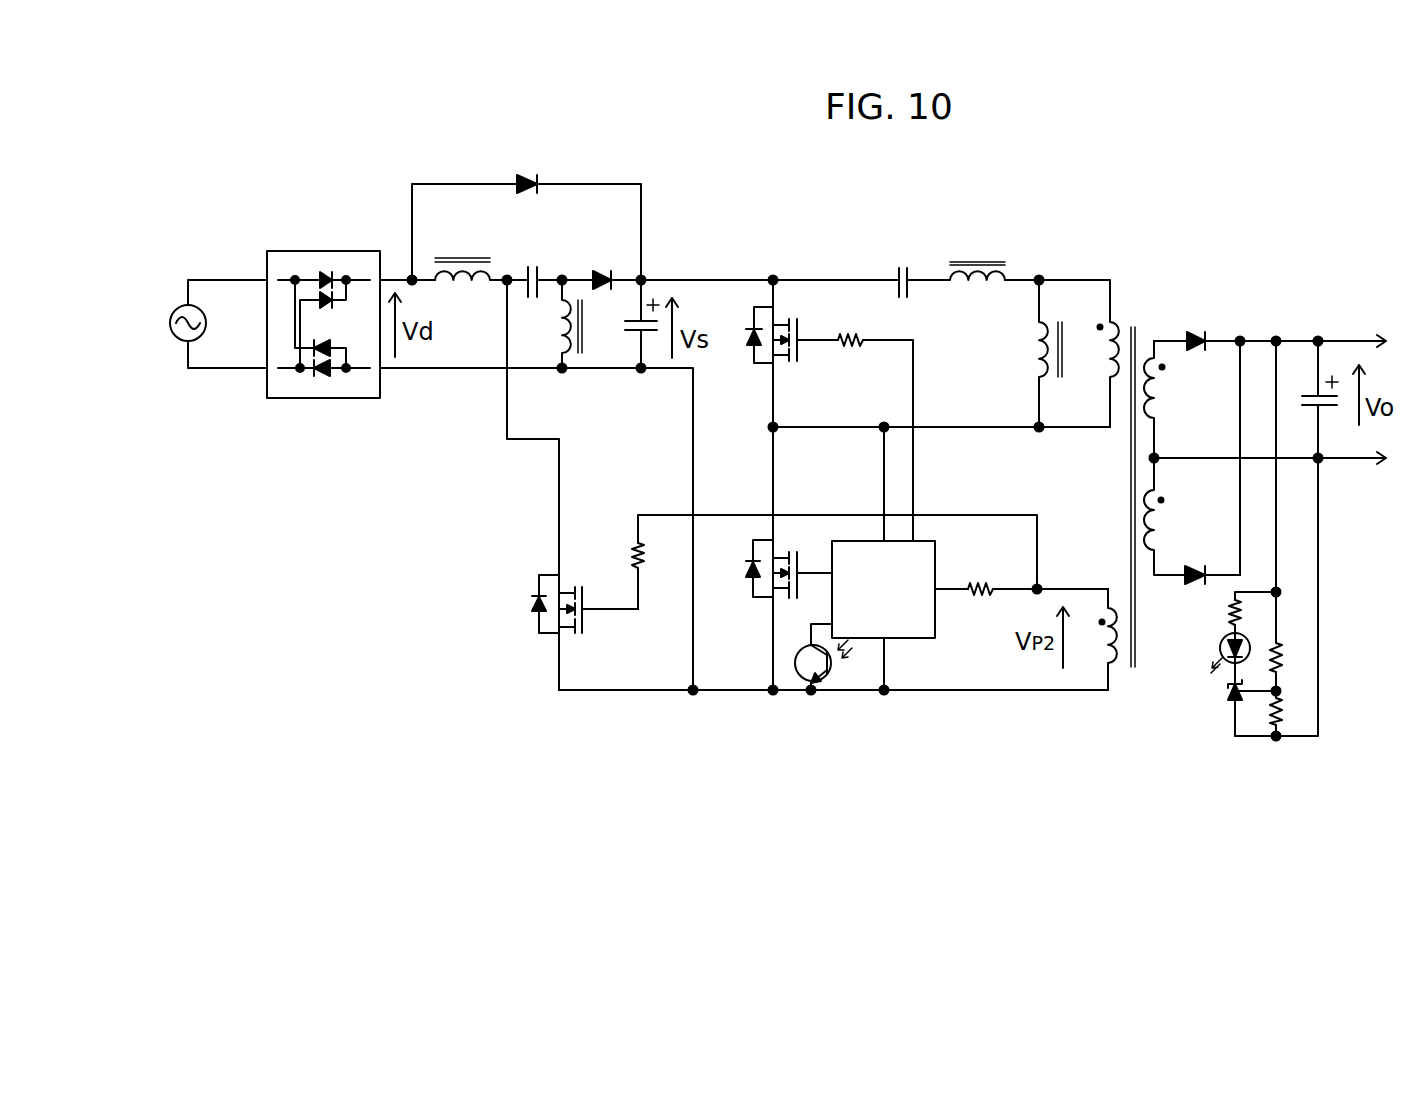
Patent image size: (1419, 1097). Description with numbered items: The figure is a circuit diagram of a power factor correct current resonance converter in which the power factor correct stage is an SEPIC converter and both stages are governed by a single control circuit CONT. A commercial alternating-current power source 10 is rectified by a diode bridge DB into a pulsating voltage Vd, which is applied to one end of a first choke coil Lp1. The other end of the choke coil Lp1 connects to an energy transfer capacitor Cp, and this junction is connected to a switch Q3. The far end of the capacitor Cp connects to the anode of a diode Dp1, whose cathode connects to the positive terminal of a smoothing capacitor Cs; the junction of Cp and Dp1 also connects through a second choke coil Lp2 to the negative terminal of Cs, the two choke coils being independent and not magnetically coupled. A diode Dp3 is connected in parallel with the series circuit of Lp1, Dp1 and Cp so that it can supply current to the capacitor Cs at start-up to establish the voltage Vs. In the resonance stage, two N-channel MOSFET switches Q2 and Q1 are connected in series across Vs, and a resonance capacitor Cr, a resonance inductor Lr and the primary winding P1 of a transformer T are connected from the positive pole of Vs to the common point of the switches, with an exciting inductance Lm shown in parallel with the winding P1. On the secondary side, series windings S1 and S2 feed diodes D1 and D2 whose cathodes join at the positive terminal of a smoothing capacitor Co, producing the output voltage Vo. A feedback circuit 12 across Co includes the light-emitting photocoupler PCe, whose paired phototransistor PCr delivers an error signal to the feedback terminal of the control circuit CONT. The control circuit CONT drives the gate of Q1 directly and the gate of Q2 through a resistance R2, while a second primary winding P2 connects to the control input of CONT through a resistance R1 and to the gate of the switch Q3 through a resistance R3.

The commercial alternating-current power source 10 is at (188, 305).
The feedback circuit 12 is at (1285, 541).
The diode bridge DB is at (323, 309).
The diode Dp3 is at (526, 211).
The choke coil Lp1 is at (462, 254).
The energy transfer capacitor Cp is at (536, 265).
The choke coil Lp2 is at (547, 324).
The diode Dp1 is at (607, 264).
The smoothing capacitor Cs is at (631, 324).
The switch Q2 is at (792, 324).
The resistance R2 is at (854, 323).
The resonance capacitor Cr is at (903, 267).
The resonance inductor Lr is at (977, 254).
The exciting inductance Lm is at (1034, 353).
The winding P1 is at (1098, 353).
The transformer T is at (1132, 480).
The winding S1 is at (1170, 399).
The winding S2 is at (1192, 516).
The diode D1 is at (1197, 326).
The diode D2 is at (1197, 563).
The smoothing capacitor Co is at (1313, 538).
The photocoupler on light-emitting side PCe is at (1210, 649).
The switch Q3 is at (585, 597).
The resistance R3 is at (657, 557).
The switch Q1 is at (789, 560).
The control circuit CONT is at (883, 589).
The photocoupler on light-receiving side PCr is at (823, 676).
The second winding P2 is at (1093, 639).
The resistance R1 is at (982, 572).